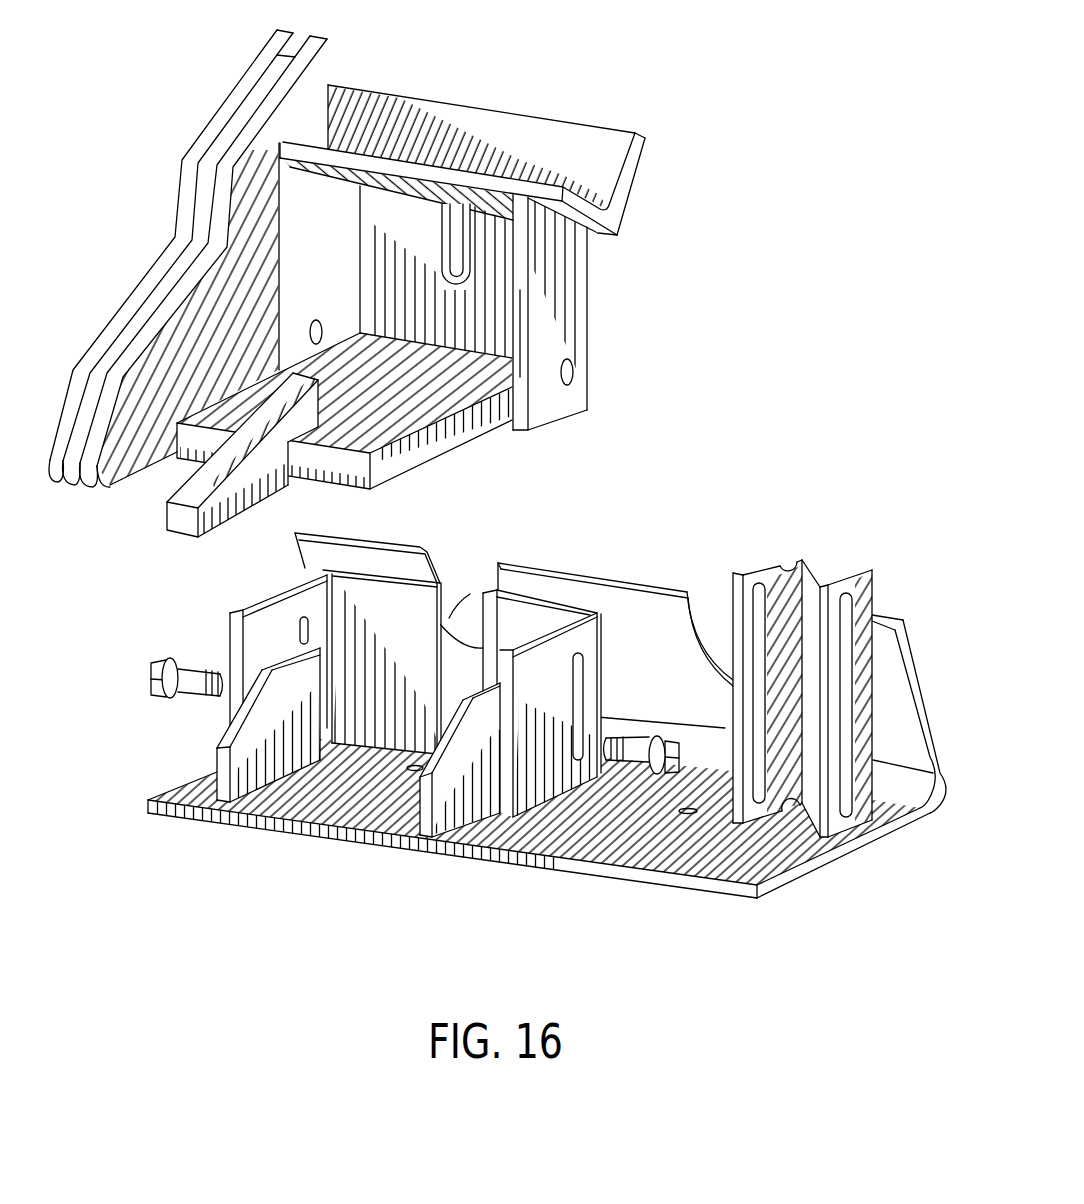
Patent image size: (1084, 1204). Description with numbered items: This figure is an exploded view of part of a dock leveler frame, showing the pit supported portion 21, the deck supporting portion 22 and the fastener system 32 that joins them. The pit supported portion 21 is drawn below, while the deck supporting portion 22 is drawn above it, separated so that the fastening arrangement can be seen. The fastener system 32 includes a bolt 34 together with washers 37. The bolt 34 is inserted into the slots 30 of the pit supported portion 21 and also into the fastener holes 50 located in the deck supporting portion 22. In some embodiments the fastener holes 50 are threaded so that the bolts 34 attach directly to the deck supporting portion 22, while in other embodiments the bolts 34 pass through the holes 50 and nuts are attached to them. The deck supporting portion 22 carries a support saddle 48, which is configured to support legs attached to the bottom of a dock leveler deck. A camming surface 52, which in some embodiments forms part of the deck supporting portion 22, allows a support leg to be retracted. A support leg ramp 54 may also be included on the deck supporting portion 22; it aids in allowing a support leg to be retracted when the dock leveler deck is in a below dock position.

The pit supported portion 21 is at (907, 580).
The deck supporting portion 22 is at (645, 287).
The slots 30 is at (304, 617).
The fastener system 32 is at (386, 799).
The bolt 34 is at (155, 662).
The washers 37 is at (167, 695).
The support saddle 48 is at (514, 122).
The fastener holes 50 is at (318, 320).
The camming surface 52 is at (215, 132).
The support leg ramp 54 is at (180, 483).